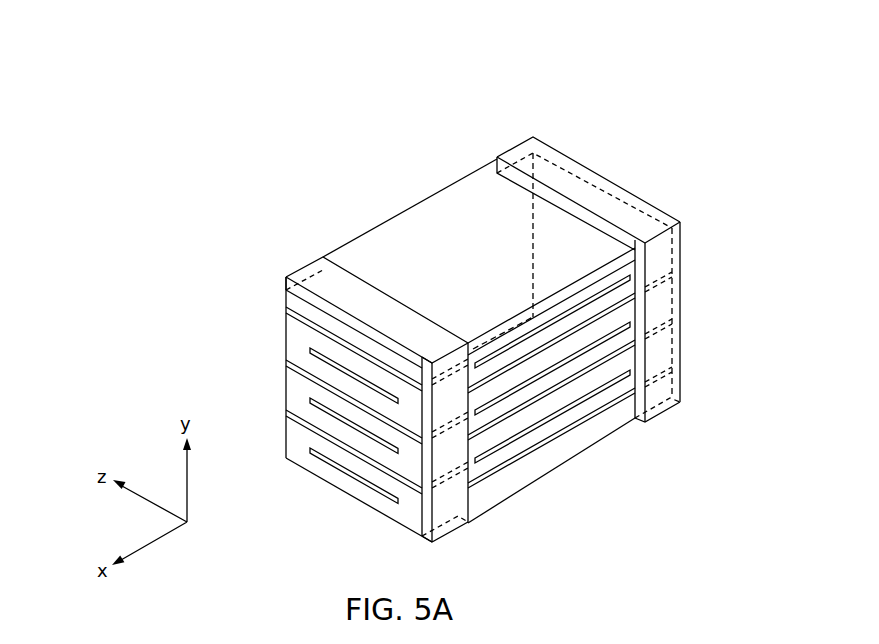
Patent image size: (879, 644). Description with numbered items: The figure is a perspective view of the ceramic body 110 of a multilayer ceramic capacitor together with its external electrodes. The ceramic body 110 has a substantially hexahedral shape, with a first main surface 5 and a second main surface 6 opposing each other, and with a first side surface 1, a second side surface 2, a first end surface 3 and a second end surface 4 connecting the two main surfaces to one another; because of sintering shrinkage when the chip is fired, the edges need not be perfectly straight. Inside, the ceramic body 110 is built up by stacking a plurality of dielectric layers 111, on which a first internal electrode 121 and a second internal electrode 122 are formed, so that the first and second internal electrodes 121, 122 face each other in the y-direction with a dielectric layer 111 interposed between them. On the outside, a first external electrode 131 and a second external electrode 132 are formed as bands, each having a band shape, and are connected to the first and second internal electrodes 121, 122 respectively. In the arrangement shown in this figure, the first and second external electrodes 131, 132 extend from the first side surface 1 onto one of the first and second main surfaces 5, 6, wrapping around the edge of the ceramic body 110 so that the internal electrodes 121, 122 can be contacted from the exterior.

The ceramic body 110 is at (275, 159).
The first side surface 1 is at (517, 425).
The second side surface 2 is at (437, 280).
The first end surface 3 is at (363, 423).
The second end surface 4 is at (587, 262).
The first main surface 5 is at (482, 260).
The second main surface 6 is at (568, 460).
The dielectric layer 111 is at (620, 346).
The first internal electrode 121 is at (302, 324).
The second internal electrode 122 is at (620, 303).
The first external electrode 131 is at (295, 272).
The second external electrode 132 is at (497, 153).